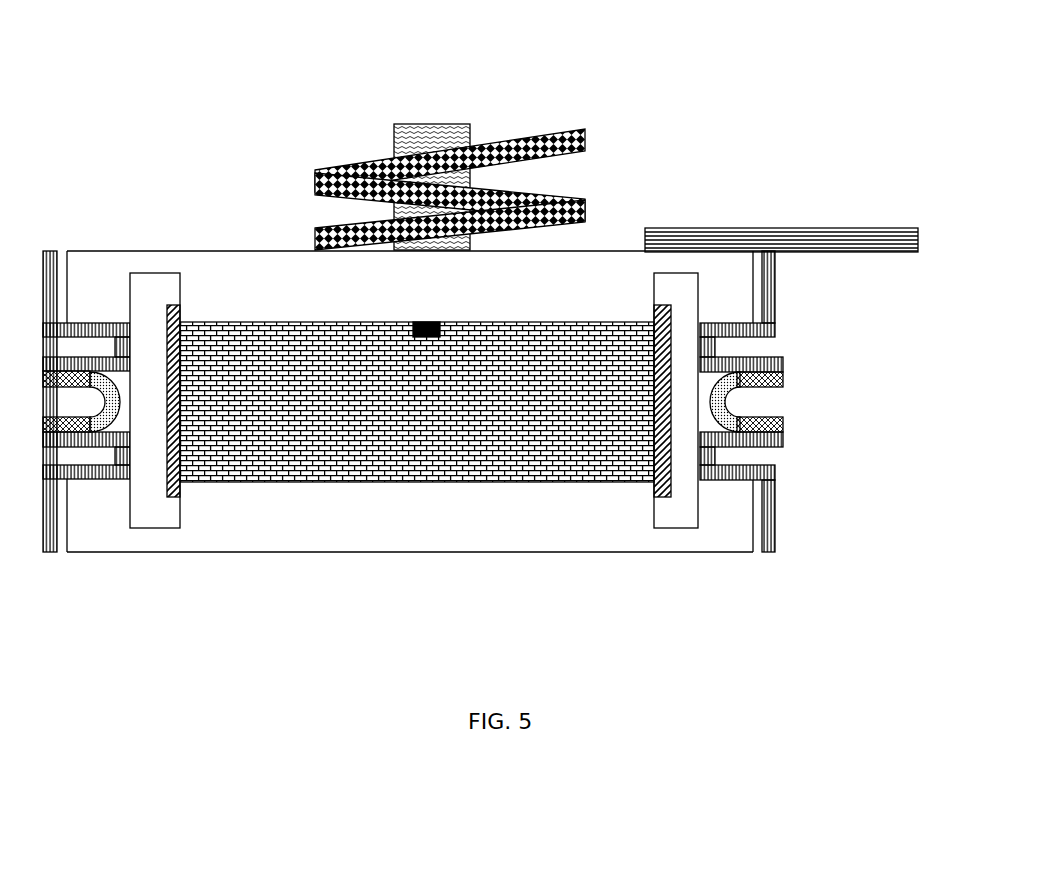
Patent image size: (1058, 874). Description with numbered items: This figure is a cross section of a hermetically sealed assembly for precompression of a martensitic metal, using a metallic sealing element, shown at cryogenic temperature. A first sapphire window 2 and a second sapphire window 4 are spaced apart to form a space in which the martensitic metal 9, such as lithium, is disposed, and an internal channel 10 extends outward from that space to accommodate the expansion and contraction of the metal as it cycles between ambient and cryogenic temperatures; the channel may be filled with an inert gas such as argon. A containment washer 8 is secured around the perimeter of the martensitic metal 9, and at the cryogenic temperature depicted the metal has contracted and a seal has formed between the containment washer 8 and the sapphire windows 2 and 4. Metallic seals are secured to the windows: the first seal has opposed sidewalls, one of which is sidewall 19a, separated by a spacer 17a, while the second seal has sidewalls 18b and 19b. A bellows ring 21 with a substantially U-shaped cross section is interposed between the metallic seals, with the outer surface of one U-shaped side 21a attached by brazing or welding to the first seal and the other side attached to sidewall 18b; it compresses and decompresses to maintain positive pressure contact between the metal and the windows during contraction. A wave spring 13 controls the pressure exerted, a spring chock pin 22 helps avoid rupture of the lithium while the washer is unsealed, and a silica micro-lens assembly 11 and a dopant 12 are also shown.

The first sapphire window 2 is at (492, 284).
The second sapphire window 4 is at (410, 401).
The containment washer 8 is at (680, 340).
The martensitic metal 9 is at (625, 322).
The internal channel 10 is at (703, 395).
The silica micro-lens assembly 11 is at (443, 124).
The dopant 12 is at (437, 322).
The wave spring 13 is at (553, 132).
The spacer 17a is at (125, 345).
The sidewall 18b is at (108, 438).
The sidewall 19a is at (78, 327).
The sidewall 19b is at (720, 478).
The bellows ring 21 is at (118, 398).
The U-shaped side 21a is at (768, 373).
The spring chock pin 22 is at (822, 237).